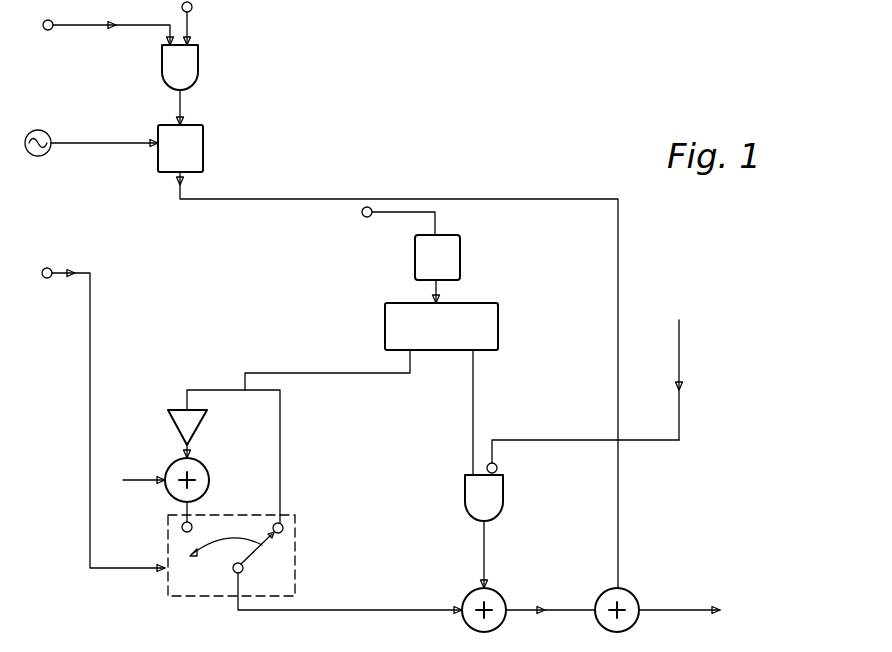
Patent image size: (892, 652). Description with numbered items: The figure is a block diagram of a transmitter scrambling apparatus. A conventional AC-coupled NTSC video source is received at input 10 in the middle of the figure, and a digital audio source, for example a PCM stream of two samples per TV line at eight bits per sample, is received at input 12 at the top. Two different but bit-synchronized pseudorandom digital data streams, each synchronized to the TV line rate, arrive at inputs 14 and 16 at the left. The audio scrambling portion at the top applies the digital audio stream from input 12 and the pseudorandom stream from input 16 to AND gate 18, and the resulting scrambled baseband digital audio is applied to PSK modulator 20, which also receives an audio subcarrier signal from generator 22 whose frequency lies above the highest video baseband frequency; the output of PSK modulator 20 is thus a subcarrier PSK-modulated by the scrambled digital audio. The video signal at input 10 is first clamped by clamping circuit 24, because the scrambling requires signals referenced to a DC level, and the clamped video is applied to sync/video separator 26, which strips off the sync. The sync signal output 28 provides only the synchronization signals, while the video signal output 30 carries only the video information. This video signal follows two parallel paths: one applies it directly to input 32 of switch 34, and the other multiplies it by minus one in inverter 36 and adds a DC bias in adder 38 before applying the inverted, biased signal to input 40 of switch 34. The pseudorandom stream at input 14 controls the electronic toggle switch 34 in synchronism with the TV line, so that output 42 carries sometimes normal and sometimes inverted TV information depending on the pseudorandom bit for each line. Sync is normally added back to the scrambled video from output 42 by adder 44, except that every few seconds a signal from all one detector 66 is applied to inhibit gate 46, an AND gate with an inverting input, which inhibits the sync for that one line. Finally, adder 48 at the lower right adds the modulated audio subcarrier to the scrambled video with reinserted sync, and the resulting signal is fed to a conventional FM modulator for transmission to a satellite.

The input 10 is at (362, 214).
The input 12 is at (192, 9).
The input 14 is at (50, 268).
The input 16 is at (48, 31).
The AND gate 18 is at (198, 83).
The PSK modulator 20 is at (203, 160).
The generator 22 is at (47, 133).
The clamping circuit 24 is at (415, 250).
The sync/video separator 26 is at (490, 303).
The sync signal output 28 is at (478, 353).
The video signal output 30 is at (405, 353).
The input 32 is at (280, 521).
The switch 34 is at (296, 572).
The inverter 36 is at (176, 425).
The adder 38 is at (205, 469).
The input 40 is at (190, 512).
The output 42 is at (238, 605).
The adder 44 is at (473, 592).
The inhibit gate 46 is at (504, 497).
The adder 48 is at (607, 591).
The all one detector 66 is at (687, 356).